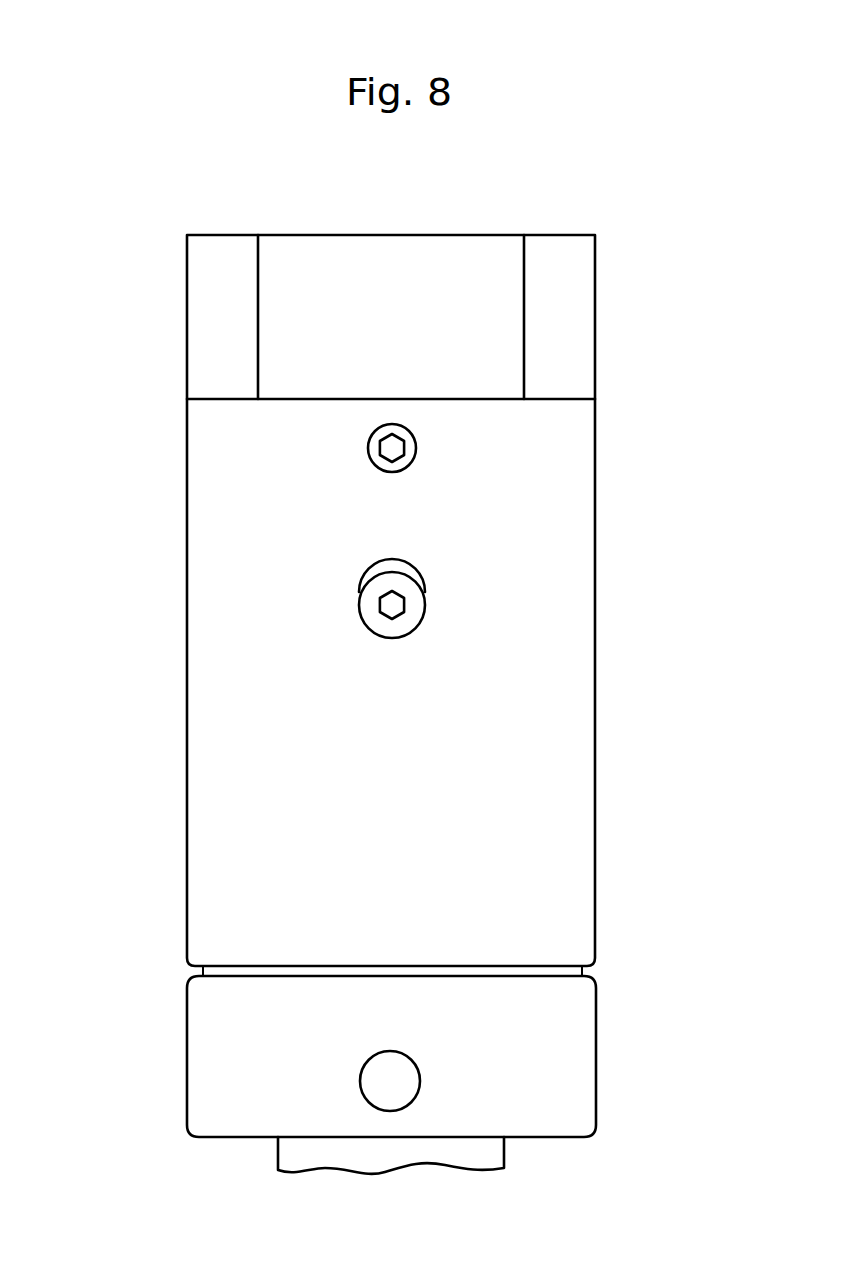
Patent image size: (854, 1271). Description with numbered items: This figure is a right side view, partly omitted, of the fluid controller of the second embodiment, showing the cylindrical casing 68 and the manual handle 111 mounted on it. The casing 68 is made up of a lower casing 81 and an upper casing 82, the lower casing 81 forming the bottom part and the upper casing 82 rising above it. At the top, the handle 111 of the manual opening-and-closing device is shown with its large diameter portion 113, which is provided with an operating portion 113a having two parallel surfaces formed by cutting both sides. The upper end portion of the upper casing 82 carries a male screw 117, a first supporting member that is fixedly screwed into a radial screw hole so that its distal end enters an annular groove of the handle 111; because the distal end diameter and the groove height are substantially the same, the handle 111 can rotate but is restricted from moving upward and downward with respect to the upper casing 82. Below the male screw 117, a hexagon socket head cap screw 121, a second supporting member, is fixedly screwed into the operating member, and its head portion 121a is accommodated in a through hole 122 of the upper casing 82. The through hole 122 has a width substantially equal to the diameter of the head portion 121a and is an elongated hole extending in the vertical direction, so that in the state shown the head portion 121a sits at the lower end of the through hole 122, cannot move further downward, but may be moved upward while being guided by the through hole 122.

The cylindrical casing 68 is at (595, 860).
The lower casing 81 is at (577, 1063).
The upper casing 82 is at (580, 773).
The manual handle 111 is at (595, 293).
The large diameter portion 113 is at (203, 282).
The operating portion 113a is at (525, 267).
The male screw 117 is at (417, 443).
The hexagon socket head cap screw 121 is at (423, 613).
The head portion 121a is at (407, 623).
The through hole 122 is at (408, 568).